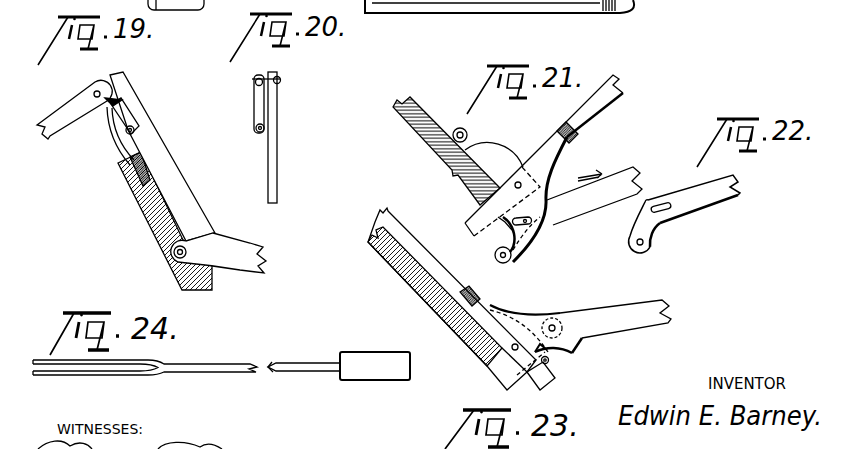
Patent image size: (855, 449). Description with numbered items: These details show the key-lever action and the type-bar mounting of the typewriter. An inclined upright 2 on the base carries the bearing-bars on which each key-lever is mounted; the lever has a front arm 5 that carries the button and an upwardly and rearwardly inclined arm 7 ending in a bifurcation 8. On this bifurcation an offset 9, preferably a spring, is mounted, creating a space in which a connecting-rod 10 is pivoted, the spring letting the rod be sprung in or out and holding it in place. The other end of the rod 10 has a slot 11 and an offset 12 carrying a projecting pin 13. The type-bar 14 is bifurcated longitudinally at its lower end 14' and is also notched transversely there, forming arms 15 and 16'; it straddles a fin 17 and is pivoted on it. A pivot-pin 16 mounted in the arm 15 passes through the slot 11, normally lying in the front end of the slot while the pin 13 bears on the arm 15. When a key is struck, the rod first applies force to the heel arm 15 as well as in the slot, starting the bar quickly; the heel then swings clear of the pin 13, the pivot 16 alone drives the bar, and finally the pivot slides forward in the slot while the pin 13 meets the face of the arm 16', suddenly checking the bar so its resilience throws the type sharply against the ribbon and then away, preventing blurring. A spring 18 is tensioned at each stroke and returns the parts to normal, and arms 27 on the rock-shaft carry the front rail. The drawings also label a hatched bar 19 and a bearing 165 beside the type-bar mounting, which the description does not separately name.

In FIG. 19, the inclined upright 2 is at (162, 221).
In FIG. 19, the front arm 5 is at (218, 253).
In FIG. 19, the upwardly and rearwardly inclined arm 7 is at (162, 156).
In FIG. 20, the upwardly and rearwardly inclined arm 7 is at (280, 137).
In FIG. 19, the bifurcation 8 is at (124, 101).
In FIG. 19, the offset 9 is at (140, 117).
In FIG. 20, the offset 9 is at (253, 119).
In FIG. 19, the connecting-rod 10 is at (74, 109).
In FIG. 20, the connecting-rod 10 is at (256, 88).
In FIG. 21, the connecting-rod 10 is at (594, 196).
In FIG. 22, the connecting-rod 10 is at (694, 199).
In FIG. 23, the connecting-rod 10 is at (615, 319).
In FIG. 22, the slot 11 is at (673, 210).
In FIG. 21, the offset 12 is at (498, 268).
In FIG. 22, the offset 12 is at (657, 226).
In FIG. 23, the offset 12 is at (560, 358).
In FIG. 21, the projecting pin 13 is at (510, 264).
In FIG. 22, the projecting pin 13 is at (642, 248).
In FIG. 23, the projecting pin 13 is at (560, 366).
In FIG. 21, the type-bar 14 is at (544, 149).
In FIG. 23, the type-bar 14 is at (452, 299).
In FIG. 24, the type-bar 14 is at (145, 356).
In FIG. 24, the lower end of type-bar 14' is at (95, 381).
In FIG. 21, the arm 15 is at (532, 199).
In FIG. 23, the arm 15 is at (575, 353).
In FIG. 21, the pivot-pin 16 is at (517, 207).
In FIG. 23, the pivot-pin 16 is at (558, 347).
In FIG. 24, the arm 16' is at (40, 359).
In FIG. 21, the fin 17 is at (494, 160).
In FIG. 19, the spring 18 is at (117, 146).
In FIG. 21, the hatched bar 19 is at (446, 151).
In FIG. 23, the hatched bar 19 is at (435, 296).
In FIG. 24, the arms 27 is at (339, 379).
In FIG. 21, the bearing 165 is at (476, 132).
In FIG. 23, the bearing 165 is at (444, 308).